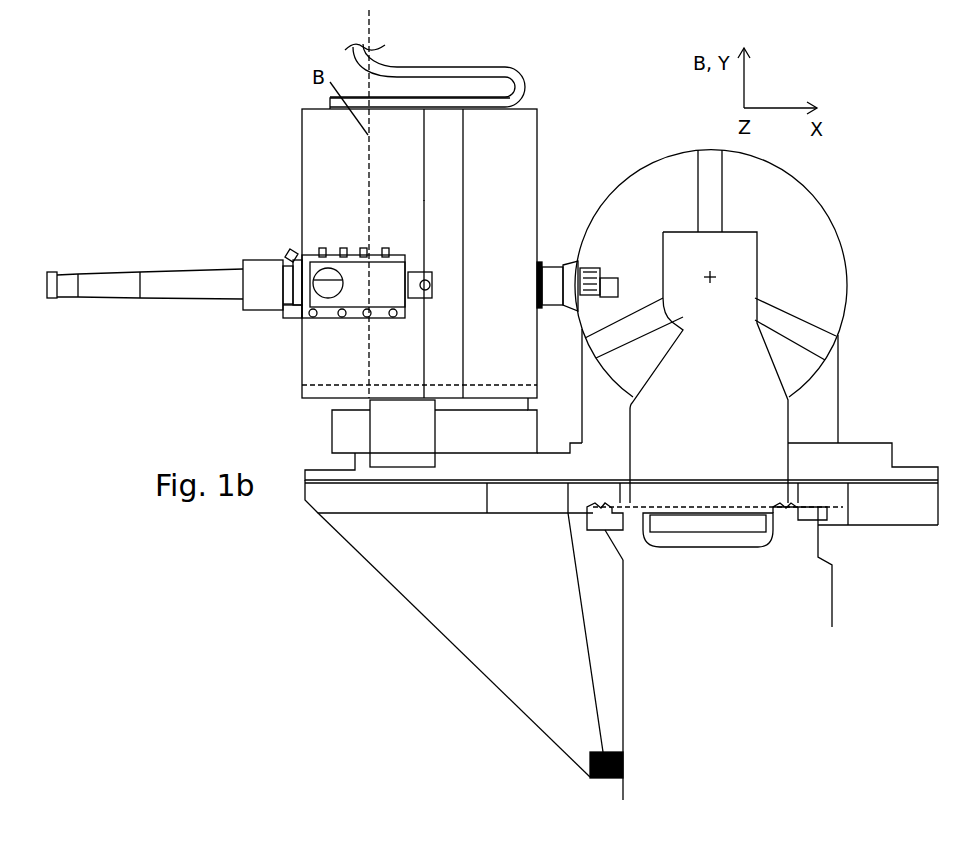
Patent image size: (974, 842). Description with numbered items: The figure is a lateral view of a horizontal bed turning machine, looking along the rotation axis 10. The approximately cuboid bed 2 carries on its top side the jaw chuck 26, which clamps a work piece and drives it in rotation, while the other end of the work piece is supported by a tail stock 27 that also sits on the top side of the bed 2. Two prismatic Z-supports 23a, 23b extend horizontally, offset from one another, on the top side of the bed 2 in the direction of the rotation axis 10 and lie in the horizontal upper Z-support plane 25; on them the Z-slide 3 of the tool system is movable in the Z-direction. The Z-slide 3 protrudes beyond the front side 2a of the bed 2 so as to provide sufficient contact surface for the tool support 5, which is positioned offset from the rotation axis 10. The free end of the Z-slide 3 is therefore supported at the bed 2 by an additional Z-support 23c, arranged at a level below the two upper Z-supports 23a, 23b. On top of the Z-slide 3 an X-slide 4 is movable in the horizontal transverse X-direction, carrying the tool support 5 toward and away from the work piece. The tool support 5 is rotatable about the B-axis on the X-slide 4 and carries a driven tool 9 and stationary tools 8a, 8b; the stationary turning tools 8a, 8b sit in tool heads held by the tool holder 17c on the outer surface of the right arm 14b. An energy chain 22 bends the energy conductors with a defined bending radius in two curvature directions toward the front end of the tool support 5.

The bed 2 is at (788, 592).
The front side of the bed 2a is at (623, 668).
The Z-slide 3 is at (621, 502).
The X-slide 4 is at (621, 484).
The tool support 5 is at (250, 172).
The stationary tool 8a is at (328, 293).
The stationary tool 8b is at (432, 291).
The driven tool 9 is at (565, 262).
The rotation axis 10 is at (712, 286).
The right arm 14b is at (376, 174).
The tool holder 17c is at (383, 300).
The energy chain 22 is at (420, 75).
The Z-support 23a is at (800, 525).
The Z-support 23b is at (605, 525).
The additional Z-support 23c is at (596, 752).
The upper Z-support plane 25 is at (835, 510).
The jaw chuck 26 is at (711, 296).
The tail stock 27 is at (718, 369).